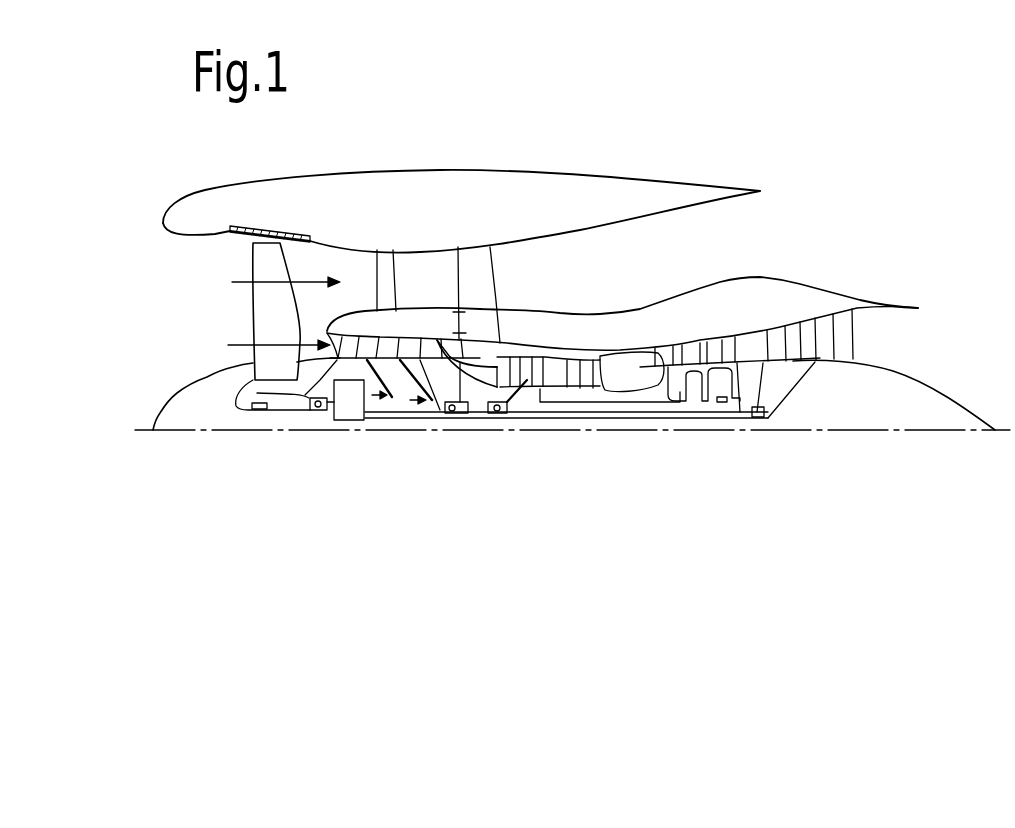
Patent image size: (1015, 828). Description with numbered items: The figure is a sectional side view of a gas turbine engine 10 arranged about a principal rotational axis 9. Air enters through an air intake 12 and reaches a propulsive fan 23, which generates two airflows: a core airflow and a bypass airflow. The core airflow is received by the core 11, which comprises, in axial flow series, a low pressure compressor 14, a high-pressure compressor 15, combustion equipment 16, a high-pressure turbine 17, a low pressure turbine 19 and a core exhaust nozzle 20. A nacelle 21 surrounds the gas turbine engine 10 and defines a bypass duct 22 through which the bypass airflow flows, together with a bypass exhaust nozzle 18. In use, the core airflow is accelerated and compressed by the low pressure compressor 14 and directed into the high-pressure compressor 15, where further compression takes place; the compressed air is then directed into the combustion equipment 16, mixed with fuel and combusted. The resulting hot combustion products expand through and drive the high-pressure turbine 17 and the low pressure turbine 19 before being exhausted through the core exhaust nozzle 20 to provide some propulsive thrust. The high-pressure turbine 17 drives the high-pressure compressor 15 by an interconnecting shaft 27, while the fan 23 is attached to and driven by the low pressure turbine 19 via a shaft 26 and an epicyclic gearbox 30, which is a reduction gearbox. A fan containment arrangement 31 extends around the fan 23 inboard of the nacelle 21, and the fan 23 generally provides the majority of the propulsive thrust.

The principal rotational axis 9 is at (813, 431).
The gas turbine engine 10 is at (450, 190).
The core 11 is at (615, 322).
The air intake 12 is at (176, 277).
The low pressure compressor 14 is at (418, 337).
The high-pressure compressor 15 is at (557, 350).
The combustion equipment 16 is at (648, 365).
The high-pressure turbine 17 is at (697, 357).
The bypass exhaust nozzle 18 is at (828, 233).
The low pressure turbine 19 is at (827, 323).
The core exhaust nozzle 20 is at (892, 346).
The nacelle 21 is at (484, 188).
The bypass duct 22 is at (738, 247).
The propulsive fan 23 is at (256, 313).
The shaft 26 is at (556, 417).
The interconnecting shaft 27 is at (597, 407).
The epicyclic gearbox 30 is at (350, 412).
The fan containment arrangement 31 is at (279, 232).